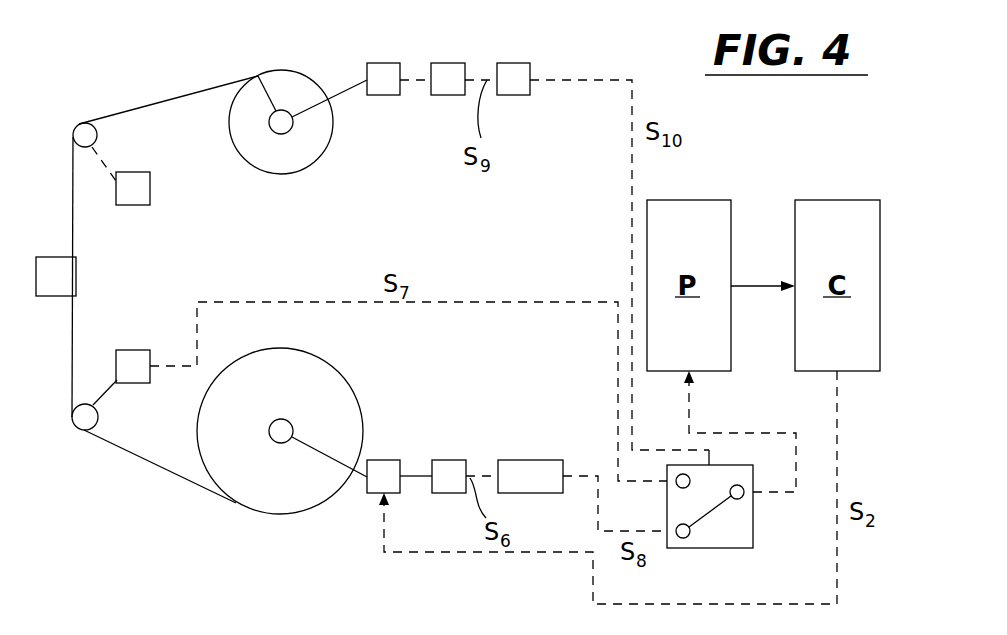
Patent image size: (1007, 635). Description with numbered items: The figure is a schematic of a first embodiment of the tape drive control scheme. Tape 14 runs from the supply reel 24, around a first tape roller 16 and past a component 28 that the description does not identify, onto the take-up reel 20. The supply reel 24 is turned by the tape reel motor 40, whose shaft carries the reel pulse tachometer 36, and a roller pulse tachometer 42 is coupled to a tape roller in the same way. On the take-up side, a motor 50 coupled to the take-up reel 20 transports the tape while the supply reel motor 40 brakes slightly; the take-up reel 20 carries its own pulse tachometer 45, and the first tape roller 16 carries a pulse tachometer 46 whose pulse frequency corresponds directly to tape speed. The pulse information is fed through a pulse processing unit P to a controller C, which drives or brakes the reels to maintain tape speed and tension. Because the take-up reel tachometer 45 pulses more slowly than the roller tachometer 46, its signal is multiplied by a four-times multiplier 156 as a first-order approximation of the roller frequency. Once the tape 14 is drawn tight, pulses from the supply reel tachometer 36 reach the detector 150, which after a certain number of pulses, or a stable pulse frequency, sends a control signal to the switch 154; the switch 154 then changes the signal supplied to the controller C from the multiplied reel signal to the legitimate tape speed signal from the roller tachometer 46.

The tape 14 is at (72, 188).
The second reel 24 is at (260, 77).
The tape reel motor 40 is at (370, 63).
The reel pulse tachometer 36 is at (434, 63).
The detector 150 is at (503, 63).
The roller pulse tachometer 42 is at (190, 195).
The print head 28 is at (57, 276).
The pulse tachometer 46 is at (146, 349).
The first tape roller 16 is at (86, 418).
The first reel 20 is at (362, 463).
The motor 50 is at (378, 460).
The pulse tachometer 45 is at (438, 460).
The 4× multiplier 156 is at (557, 460).
The switch 154 is at (753, 523).